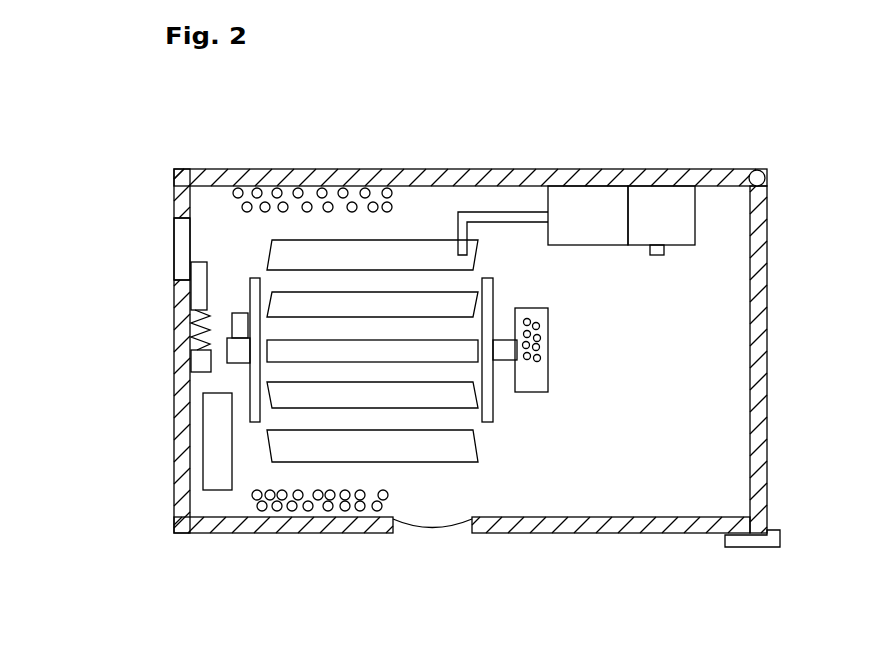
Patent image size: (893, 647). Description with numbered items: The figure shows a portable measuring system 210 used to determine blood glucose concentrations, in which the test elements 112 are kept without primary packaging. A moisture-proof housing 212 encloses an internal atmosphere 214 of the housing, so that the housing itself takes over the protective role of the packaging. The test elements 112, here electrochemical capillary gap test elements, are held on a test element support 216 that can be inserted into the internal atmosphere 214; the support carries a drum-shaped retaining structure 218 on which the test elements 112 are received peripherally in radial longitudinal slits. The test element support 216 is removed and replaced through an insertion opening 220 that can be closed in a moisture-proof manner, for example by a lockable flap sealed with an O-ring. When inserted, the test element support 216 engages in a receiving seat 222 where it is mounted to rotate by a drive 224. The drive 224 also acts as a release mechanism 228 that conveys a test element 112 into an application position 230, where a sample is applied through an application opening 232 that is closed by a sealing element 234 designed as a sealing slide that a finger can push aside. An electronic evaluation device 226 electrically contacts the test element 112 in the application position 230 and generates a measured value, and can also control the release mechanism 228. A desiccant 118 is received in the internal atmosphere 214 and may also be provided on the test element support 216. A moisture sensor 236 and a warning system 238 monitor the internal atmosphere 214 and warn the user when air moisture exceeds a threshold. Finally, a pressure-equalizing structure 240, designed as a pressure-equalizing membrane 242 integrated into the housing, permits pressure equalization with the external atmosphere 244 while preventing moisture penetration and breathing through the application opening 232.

The test elements 112 is at (428, 255).
The desiccant 118 is at (298, 193).
The portable measuring system 210 is at (566, 142).
The moisture-proof housing 212 is at (716, 178).
The internal atmosphere of the housing 214 is at (701, 351).
The test element support 216 is at (483, 466).
The retaining structure 218 is at (489, 416).
The insertion opening 220 is at (757, 473).
The receiving seat 222 is at (237, 377).
The drive 224 is at (217, 440).
The electronic evaluation device 226 is at (588, 215).
The release mechanism 228 is at (145, 441).
The application position 230 is at (241, 246).
The application opening 232 is at (159, 253).
The sealing element 234 is at (193, 295).
The moisture sensor 236 is at (657, 256).
The warning system 238 is at (661, 215).
The pressure-equalizing structure 240 is at (403, 555).
The pressure-equalizing membrane 242 is at (440, 528).
The external atmosphere 244 is at (752, 571).